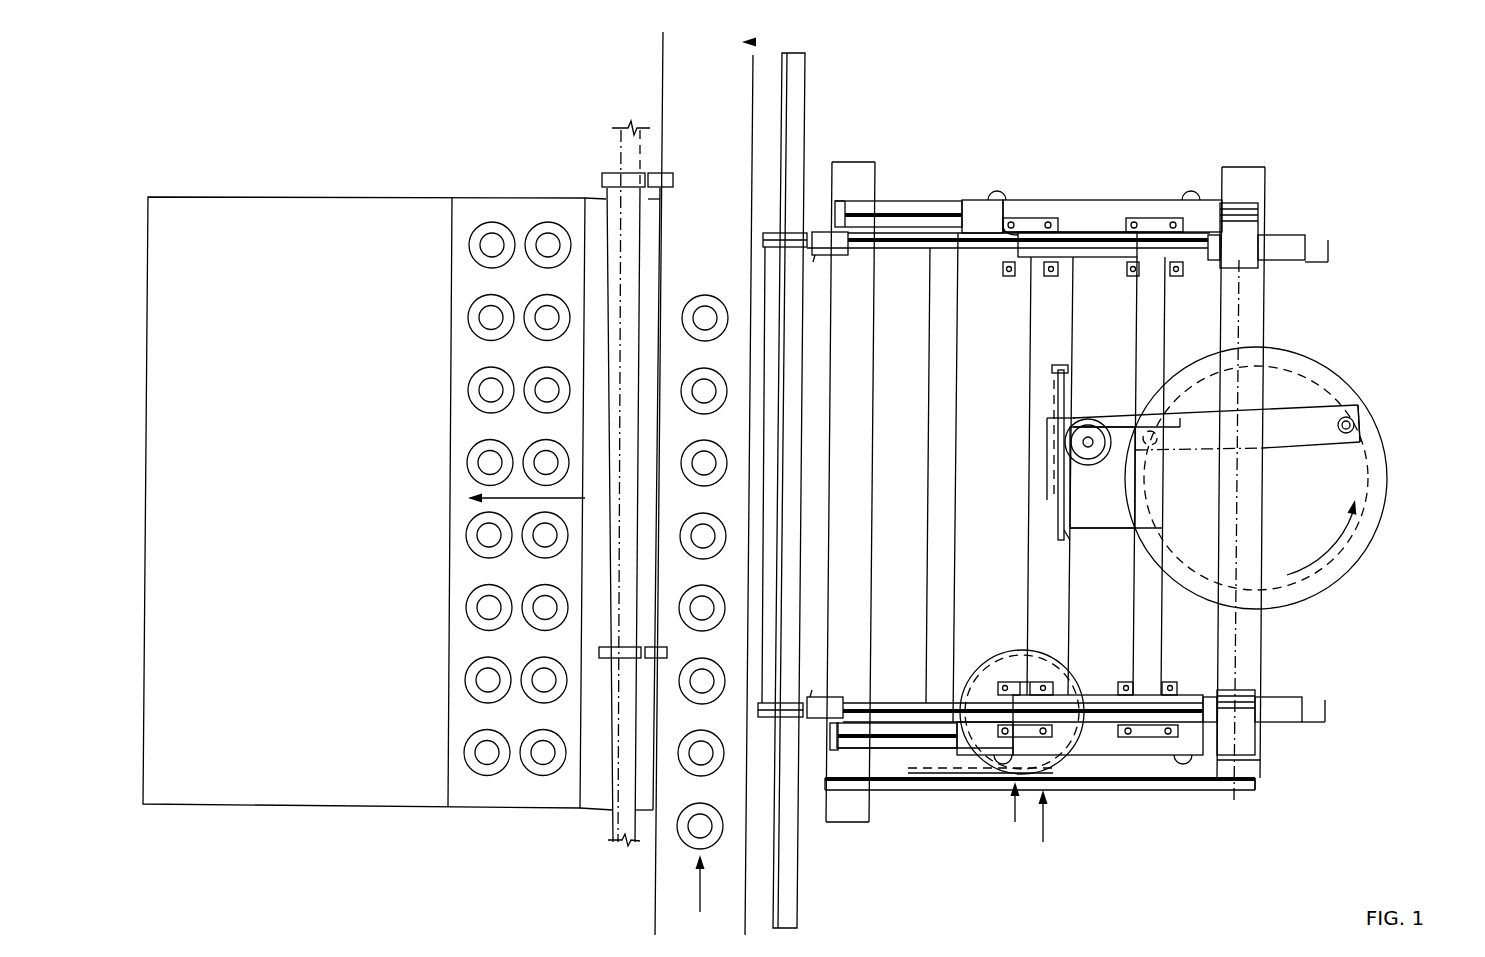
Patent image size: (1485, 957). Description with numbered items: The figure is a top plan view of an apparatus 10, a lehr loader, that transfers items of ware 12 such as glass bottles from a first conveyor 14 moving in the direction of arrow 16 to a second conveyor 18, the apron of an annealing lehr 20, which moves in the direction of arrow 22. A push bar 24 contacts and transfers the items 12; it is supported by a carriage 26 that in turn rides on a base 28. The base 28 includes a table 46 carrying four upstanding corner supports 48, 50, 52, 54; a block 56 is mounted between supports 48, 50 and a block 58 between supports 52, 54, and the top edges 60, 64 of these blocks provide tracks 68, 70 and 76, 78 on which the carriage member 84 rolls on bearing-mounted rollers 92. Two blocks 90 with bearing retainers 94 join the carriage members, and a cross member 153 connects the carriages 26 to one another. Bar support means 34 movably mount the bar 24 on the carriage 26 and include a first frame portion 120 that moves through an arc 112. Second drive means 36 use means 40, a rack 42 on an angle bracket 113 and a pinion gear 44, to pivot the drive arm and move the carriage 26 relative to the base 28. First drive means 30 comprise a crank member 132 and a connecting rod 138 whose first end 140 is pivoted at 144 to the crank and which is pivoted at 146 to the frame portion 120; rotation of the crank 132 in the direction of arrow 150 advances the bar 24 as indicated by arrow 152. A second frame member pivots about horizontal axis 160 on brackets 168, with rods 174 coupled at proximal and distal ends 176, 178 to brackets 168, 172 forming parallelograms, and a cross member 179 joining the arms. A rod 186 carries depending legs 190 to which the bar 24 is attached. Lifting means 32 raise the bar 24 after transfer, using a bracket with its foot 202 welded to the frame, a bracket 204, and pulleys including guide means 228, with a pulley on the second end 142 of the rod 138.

The apparatus 10 is at (1360, 787).
The items of ware 12 is at (488, 222).
The first conveyor 14 is at (677, 130).
The arrow 16 is at (700, 893).
The second conveyor 18 is at (522, 213).
The annealing lehr 20 is at (297, 451).
The arrow 22 is at (478, 500).
The push bar 24 is at (618, 158).
The carriage 26 is at (1095, 274).
The base 28 is at (914, 146).
The first drive means 30 is at (1372, 368).
The lifting means 32 is at (1046, 504).
The bar support means 34 is at (1055, 162).
The second drive means 36 is at (1017, 815).
The rack and pinion means 40 is at (1049, 829).
The rack 42 is at (905, 740).
The pinion gear 44 is at (985, 740).
The table 46 is at (967, 520).
The corner support 48 is at (827, 750).
The corner support 50 is at (1240, 765).
The corner support 52 is at (850, 200).
The corner support 54 is at (1262, 212).
The block 56 is at (898, 740).
The block 58 is at (940, 200).
The top edge 60 is at (850, 750).
The top edge 64 is at (885, 198).
The track 68 is at (920, 750).
The track 70 is at (887, 730).
The track 76 is at (922, 250).
The track 78 is at (912, 212).
The carriage member 84 is at (1112, 212).
The blocks 90 is at (1005, 272).
The rollers 92 is at (1000, 192).
The bearing retainer 94 is at (1020, 277).
The arc 112 is at (1038, 683).
The angle bracket 113 is at (1085, 776).
The first frame portion 120 is at (1073, 235).
The crank member 132 is at (1271, 515).
The connecting rod 138 is at (1266, 435).
The first end 140 is at (1365, 445).
The second end 142 is at (1101, 409).
The pivotal connection 144 is at (1354, 424).
The pivotal connection 146 is at (1157, 446).
The arrow 150 is at (1310, 568).
The arrow 152 is at (756, 42).
The cross member 153 is at (1040, 575).
The horizontal axis 160 is at (1240, 636).
The brackets 168 is at (1274, 277).
The brackets 172 is at (848, 268).
The rods 174 is at (885, 250).
The proximal end 176 is at (1232, 252).
The distal end 178 is at (812, 245).
The cross member 179 is at (1160, 580).
The rod 186 is at (762, 423).
The depending legs 190 is at (785, 249).
The foot 202 is at (1078, 515).
The bracket 204 is at (1070, 538).
The guide means 228 is at (1082, 430).